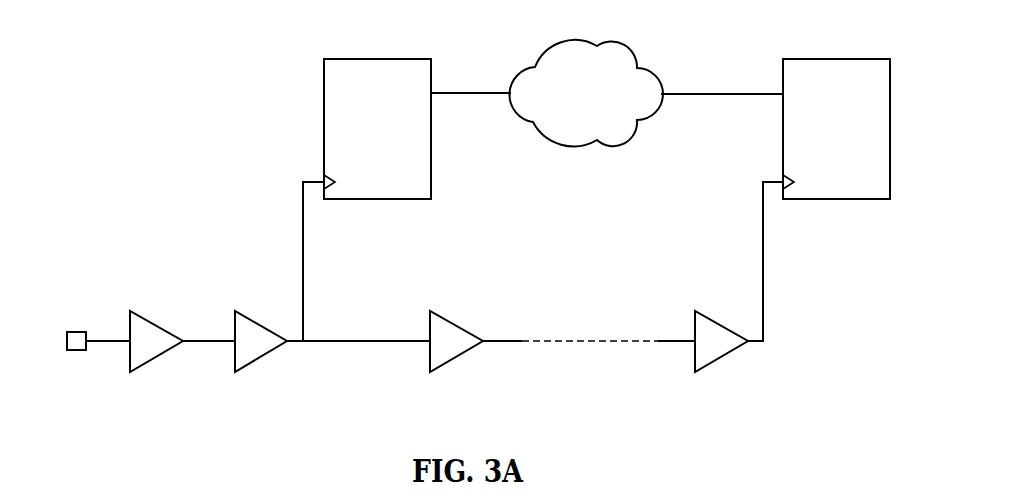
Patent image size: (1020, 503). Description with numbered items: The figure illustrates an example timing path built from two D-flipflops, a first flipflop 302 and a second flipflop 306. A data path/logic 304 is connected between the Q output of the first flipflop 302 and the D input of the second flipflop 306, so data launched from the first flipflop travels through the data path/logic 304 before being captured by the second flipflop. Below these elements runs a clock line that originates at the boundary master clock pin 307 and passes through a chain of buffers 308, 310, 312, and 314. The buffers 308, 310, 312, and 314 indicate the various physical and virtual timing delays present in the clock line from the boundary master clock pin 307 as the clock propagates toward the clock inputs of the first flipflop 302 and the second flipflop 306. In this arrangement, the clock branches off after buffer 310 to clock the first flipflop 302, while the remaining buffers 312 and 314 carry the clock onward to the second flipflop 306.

The FF1 302 is at (398, 59).
The data path/logic 304 is at (549, 43).
The FF2 306 is at (858, 59).
The boundary master clock pin 307 is at (73, 332).
The buffer 308 is at (153, 358).
The buffer 310 is at (258, 358).
The buffer 312 is at (453, 358).
The buffer 314 is at (720, 357).